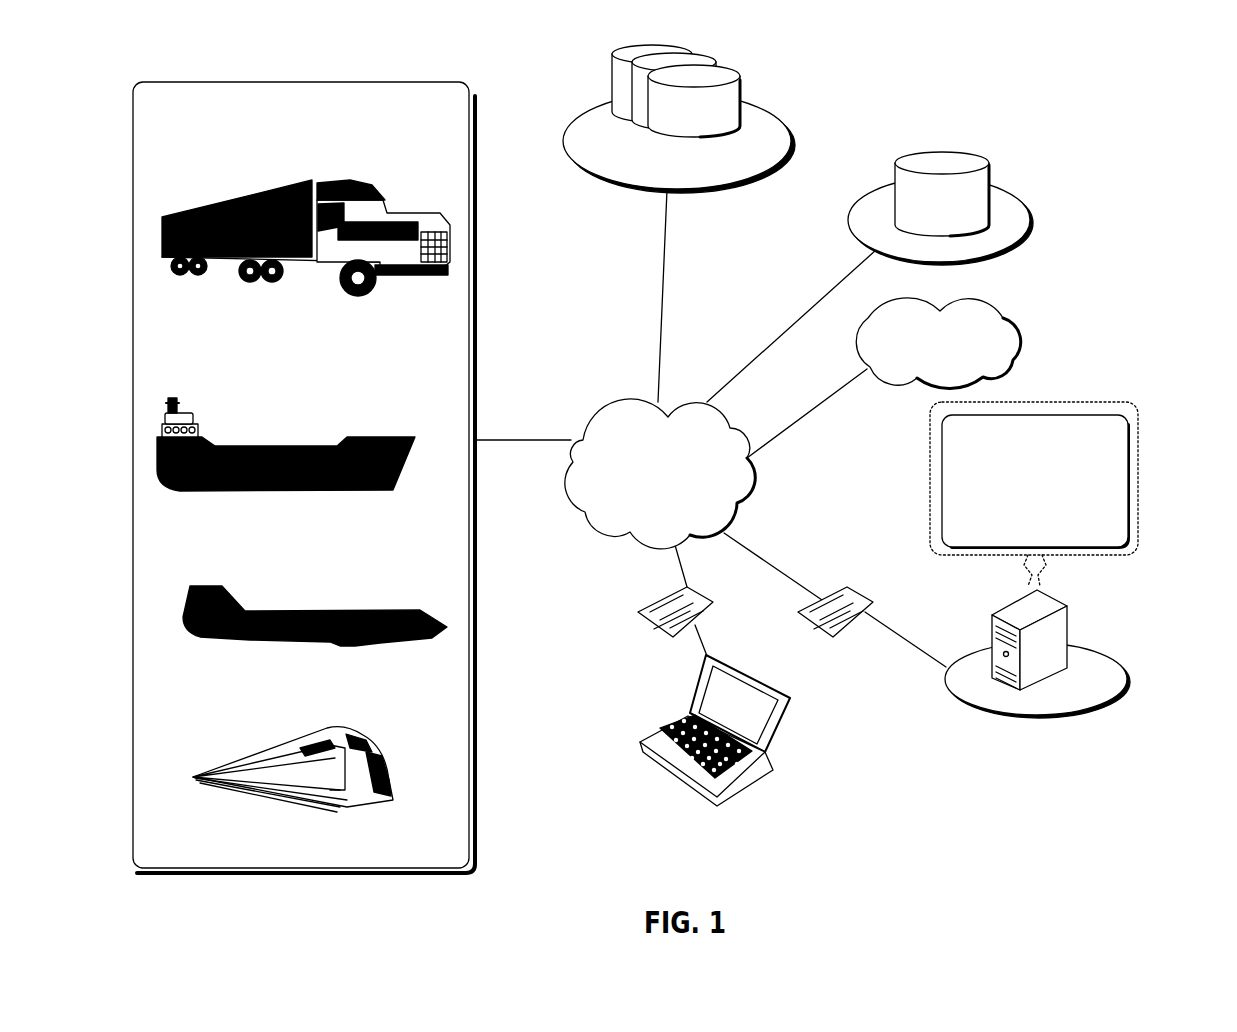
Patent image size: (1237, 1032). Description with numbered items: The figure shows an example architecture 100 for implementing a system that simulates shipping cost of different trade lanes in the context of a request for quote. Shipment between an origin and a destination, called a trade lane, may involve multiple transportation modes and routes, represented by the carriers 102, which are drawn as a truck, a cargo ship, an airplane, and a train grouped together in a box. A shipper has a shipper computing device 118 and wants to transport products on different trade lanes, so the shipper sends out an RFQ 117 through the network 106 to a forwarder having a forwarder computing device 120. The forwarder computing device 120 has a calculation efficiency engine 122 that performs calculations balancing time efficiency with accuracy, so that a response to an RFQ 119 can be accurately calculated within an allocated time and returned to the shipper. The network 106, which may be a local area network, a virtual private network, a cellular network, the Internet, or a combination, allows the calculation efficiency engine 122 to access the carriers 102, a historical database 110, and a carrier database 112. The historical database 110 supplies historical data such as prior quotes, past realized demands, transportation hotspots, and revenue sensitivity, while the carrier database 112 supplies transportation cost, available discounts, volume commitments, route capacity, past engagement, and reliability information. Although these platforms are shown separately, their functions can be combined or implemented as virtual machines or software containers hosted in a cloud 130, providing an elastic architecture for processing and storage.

The architecture 100 is at (200, 38).
The carriers 102 is at (291, 174).
The network 106 is at (620, 402).
The historical database 110 is at (753, 97).
The carrier database 112 is at (992, 193).
The RFQ 117 is at (705, 602).
The shipper computing device 118 is at (658, 743).
The response to an RFQ 119 is at (852, 602).
The forwarder computing device 120 is at (1063, 589).
The calculation efficiency engine 122 is at (1019, 530).
The cloud 130 is at (1012, 320).